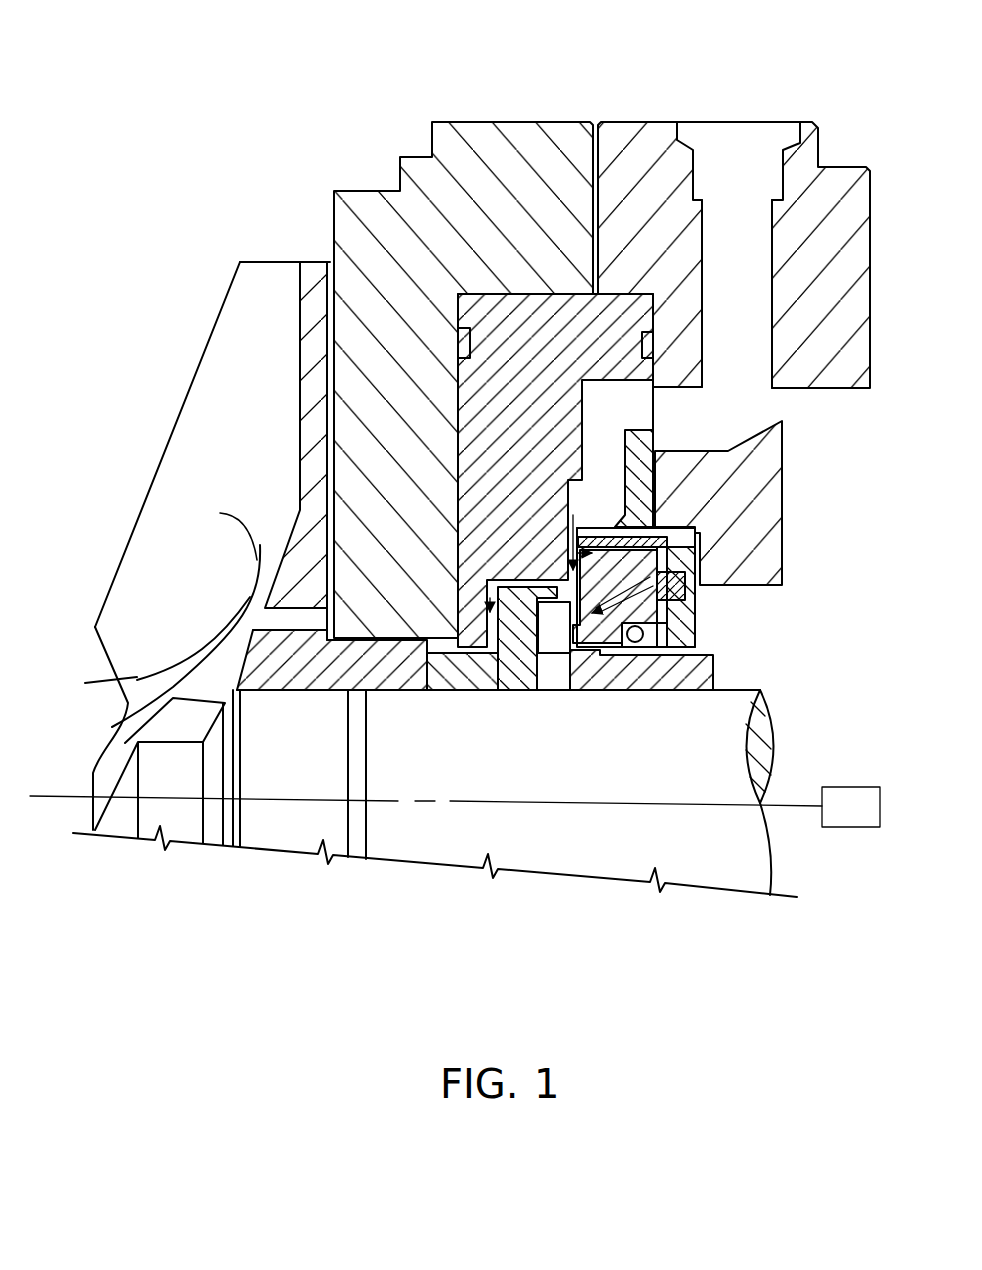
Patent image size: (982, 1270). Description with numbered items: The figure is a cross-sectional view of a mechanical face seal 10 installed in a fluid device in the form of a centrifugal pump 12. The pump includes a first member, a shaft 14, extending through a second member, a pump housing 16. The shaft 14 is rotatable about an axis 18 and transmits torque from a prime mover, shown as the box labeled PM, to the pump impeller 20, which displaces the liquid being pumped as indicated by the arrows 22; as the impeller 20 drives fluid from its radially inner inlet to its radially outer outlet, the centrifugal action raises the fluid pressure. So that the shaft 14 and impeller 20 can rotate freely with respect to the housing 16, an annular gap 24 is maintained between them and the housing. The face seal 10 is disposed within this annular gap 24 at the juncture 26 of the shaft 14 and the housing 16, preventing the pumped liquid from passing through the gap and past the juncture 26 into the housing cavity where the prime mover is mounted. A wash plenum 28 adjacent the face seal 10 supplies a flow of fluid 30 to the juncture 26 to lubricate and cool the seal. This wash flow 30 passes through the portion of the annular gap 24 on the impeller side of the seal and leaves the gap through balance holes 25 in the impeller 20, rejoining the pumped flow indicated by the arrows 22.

The mechanical face seal 10 is at (557, 700).
The centrifugal pump 12 is at (235, 170).
The shaft 14 is at (745, 690).
The pump housing 16 is at (507, 122).
The axis 18 is at (680, 806).
The pump impeller 20 is at (133, 638).
The arrows indicating liquid flow 22 is at (276, 297).
The annular gap 24 is at (433, 650).
The balance holes 25 is at (221, 524).
The juncture 26 is at (513, 717).
The wash plenum 28 is at (738, 132).
The flow of fluid 30 is at (738, 146).